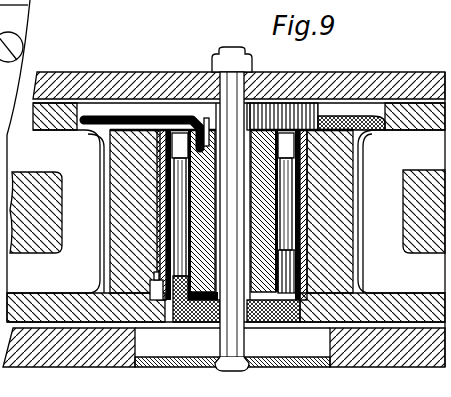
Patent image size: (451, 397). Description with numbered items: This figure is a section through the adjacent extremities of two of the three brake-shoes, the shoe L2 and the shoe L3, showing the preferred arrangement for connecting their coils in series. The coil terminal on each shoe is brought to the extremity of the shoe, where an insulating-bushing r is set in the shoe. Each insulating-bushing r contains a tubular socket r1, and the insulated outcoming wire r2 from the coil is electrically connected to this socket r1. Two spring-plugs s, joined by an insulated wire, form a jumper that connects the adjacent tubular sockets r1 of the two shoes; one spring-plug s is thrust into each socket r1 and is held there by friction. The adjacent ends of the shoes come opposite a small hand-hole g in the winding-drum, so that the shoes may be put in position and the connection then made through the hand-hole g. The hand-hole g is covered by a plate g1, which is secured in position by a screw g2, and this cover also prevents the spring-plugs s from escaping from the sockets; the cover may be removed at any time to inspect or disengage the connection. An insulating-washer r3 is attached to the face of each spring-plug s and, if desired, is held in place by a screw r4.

The insulating-bushing r is at (163, 237).
The tubular socket r1 is at (163, 153).
The insulated outcoming wire r2 is at (119, 128).
The insulating-washer r3 is at (175, 305).
The screw r4 is at (150, 285).
The brake-shoe L2 is at (163, 211).
The brake-shoe L3 is at (301, 211).
The spring-plug s is at (233, 204).
The hand-hole g is at (224, 347).
The plate g1 is at (184, 358).
The screw g2 is at (238, 342).